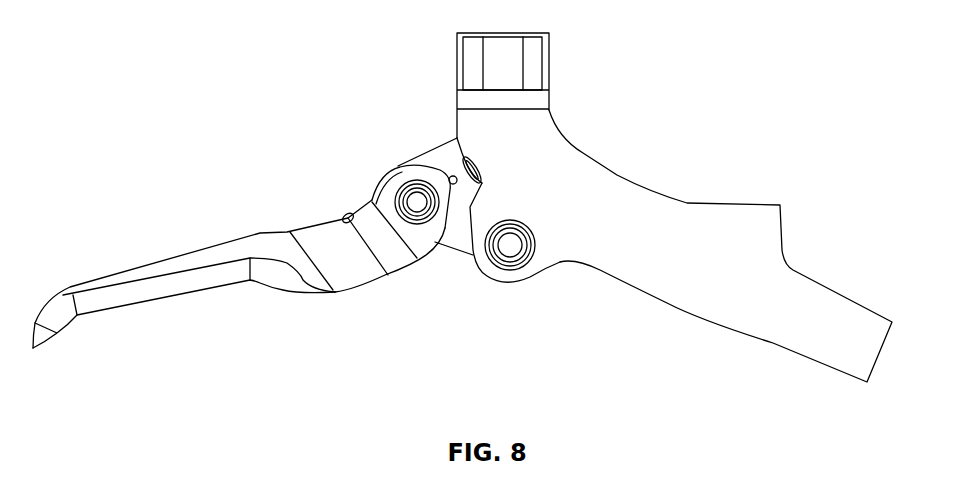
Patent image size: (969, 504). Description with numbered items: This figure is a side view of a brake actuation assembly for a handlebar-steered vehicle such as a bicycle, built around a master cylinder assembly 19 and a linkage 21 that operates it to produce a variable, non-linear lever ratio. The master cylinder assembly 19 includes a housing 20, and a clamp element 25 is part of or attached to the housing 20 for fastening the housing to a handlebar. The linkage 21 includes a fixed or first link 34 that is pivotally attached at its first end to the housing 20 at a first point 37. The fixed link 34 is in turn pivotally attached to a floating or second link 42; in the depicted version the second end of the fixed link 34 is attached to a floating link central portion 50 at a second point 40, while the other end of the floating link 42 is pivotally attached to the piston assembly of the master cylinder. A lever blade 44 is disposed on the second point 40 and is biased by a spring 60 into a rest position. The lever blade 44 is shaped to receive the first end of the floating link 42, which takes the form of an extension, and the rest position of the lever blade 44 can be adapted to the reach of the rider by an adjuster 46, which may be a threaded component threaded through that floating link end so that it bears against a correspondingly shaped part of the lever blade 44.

The master cylinder assembly 19 is at (645, 207).
The housing 20 is at (627, 187).
The linkage 21 is at (241, 205).
The clamp element 25 is at (530, 70).
The fixed link 34 is at (452, 250).
The first point 37 is at (510, 245).
The second point 40 is at (417, 202).
The floating link 42 is at (450, 143).
The lever blade 44 is at (235, 273).
The adjuster 46 is at (345, 217).
The floating link central portion 50 is at (436, 156).
The spring 60 is at (377, 180).